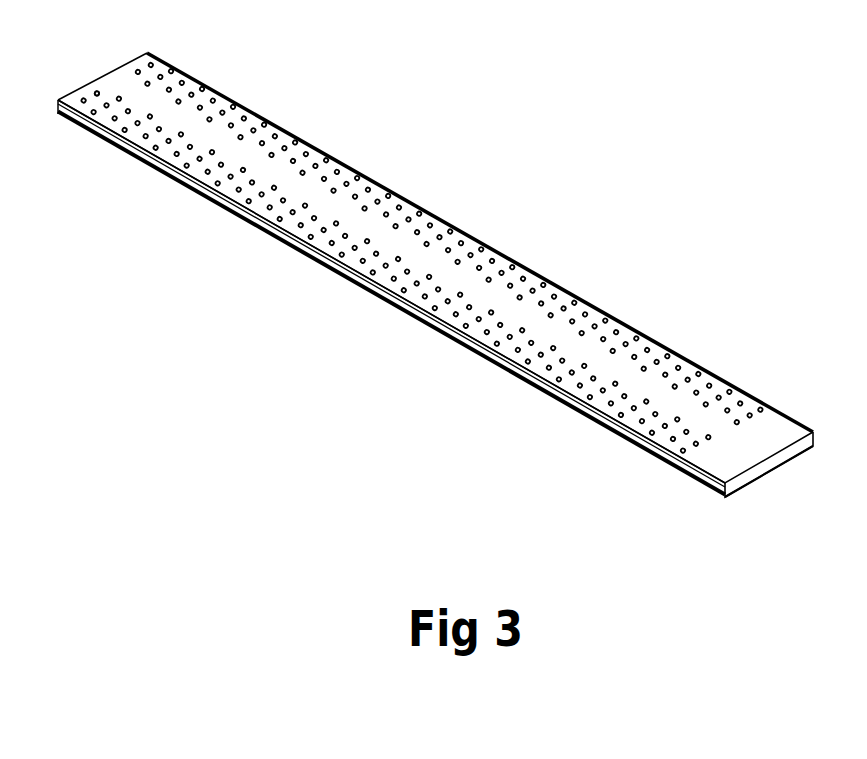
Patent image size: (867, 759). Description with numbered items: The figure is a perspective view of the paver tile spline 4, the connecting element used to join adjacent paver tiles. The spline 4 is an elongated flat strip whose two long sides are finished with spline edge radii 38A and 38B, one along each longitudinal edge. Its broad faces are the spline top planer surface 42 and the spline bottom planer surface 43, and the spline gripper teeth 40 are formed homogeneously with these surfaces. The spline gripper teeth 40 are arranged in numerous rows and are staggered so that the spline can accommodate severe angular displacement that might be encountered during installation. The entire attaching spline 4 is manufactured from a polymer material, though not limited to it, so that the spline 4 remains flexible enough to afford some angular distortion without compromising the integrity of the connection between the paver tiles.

The paver tile spline 4 is at (748, 475).
The spline gripper teeth 40 is at (96, 92).
The spline top planer surface 42 is at (293, 187).
The spline edge radius 38A is at (402, 299).
The spline edge radius 38B is at (500, 254).
The spline bottom planer surface 43 is at (162, 174).